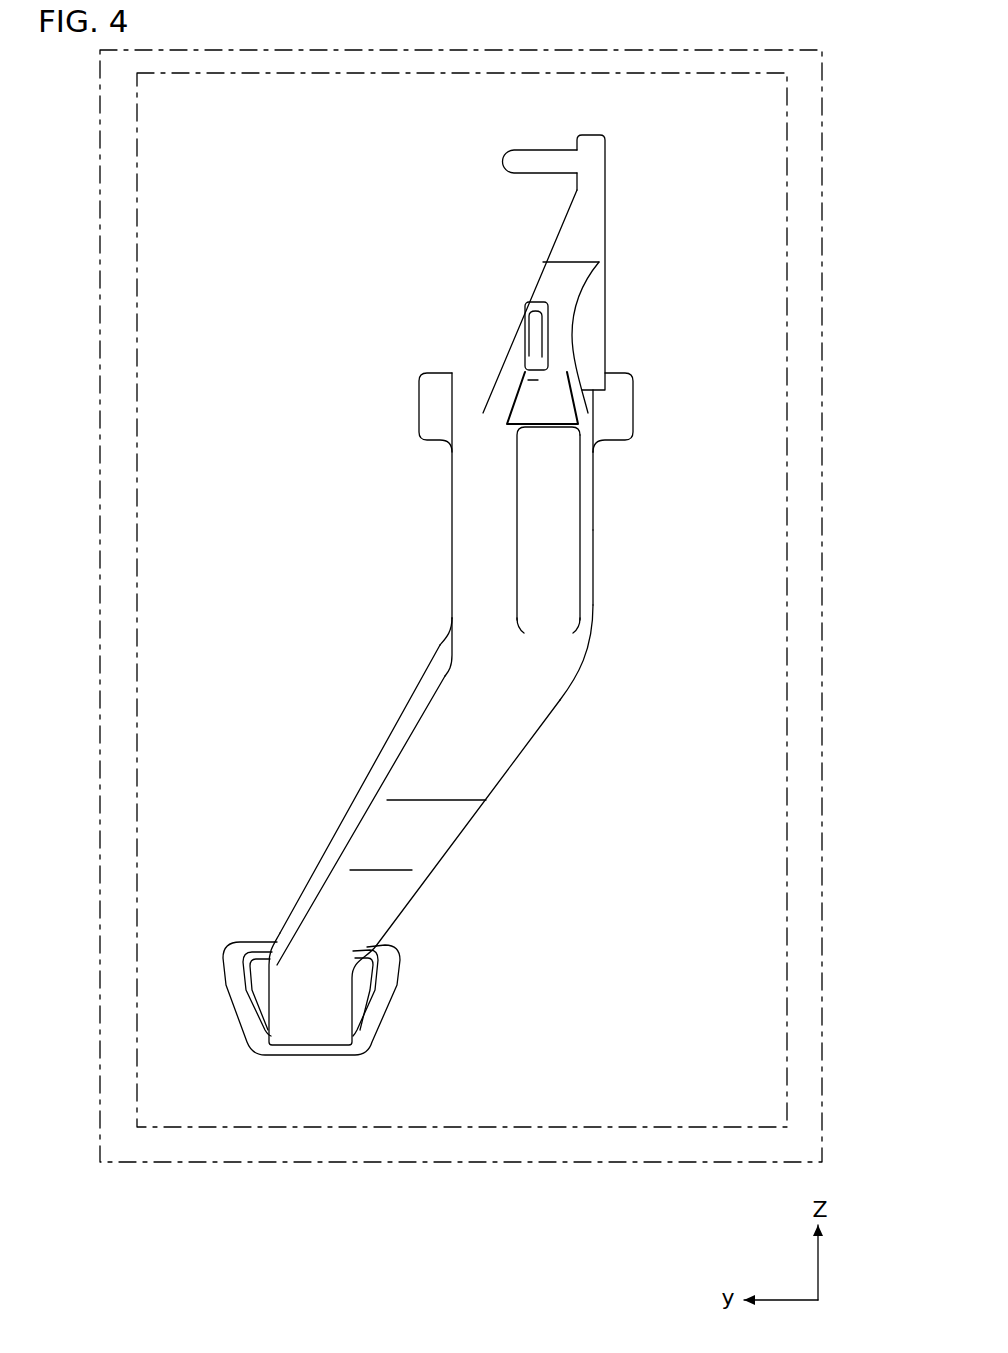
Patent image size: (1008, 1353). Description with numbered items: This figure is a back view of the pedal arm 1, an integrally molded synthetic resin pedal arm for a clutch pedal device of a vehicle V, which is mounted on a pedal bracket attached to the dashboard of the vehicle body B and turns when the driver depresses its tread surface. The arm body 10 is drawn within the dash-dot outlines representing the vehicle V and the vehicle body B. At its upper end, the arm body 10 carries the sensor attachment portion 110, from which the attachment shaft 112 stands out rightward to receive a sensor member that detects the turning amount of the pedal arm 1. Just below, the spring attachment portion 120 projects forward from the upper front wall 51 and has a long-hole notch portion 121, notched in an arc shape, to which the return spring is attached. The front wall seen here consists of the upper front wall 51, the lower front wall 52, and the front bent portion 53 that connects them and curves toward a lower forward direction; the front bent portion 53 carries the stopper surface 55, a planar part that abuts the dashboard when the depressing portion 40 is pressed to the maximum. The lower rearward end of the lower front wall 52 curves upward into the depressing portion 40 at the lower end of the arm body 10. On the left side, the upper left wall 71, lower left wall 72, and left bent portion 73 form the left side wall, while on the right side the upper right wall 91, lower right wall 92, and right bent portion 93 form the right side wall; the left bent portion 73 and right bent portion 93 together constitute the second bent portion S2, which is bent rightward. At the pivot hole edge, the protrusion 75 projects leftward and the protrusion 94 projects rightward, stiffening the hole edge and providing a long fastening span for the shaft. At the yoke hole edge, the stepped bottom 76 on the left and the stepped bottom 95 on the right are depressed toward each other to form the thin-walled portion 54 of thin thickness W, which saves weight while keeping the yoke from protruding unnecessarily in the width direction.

The pedal arm 1 is at (717, 226).
The arm body 10 is at (687, 465).
The depressing portion 40 is at (224, 918).
The upper front wall 51 is at (463, 533).
The lower front wall 52 is at (383, 912).
The front bent portion 53 is at (382, 830).
The thin-walled portion 54 is at (563, 465).
The stopper surface 55 is at (453, 827).
The upper left wall 71 is at (610, 564).
The lower left wall 72 is at (549, 752).
The left bent portion 73 is at (589, 661).
The protrusion 75 is at (618, 418).
The stepped bottom 76 is at (583, 513).
The upper right wall 91 is at (431, 576).
The lower right wall 92 is at (366, 746).
The right bent portion 93 is at (411, 625).
The protrusion 94 is at (428, 412).
The stepped bottom 95 is at (517, 470).
The sensor attachment portion 110 is at (473, 150).
The attachment shaft 112 is at (533, 158).
The spring attachment portion 120 is at (553, 316).
The long-hole notch portion 121 is at (533, 337).
The vehicle body B is at (800, 335).
The vehicle V is at (840, 175).
The thin thickness W is at (578, 567).
The second bent portion S2 is at (647, 658).